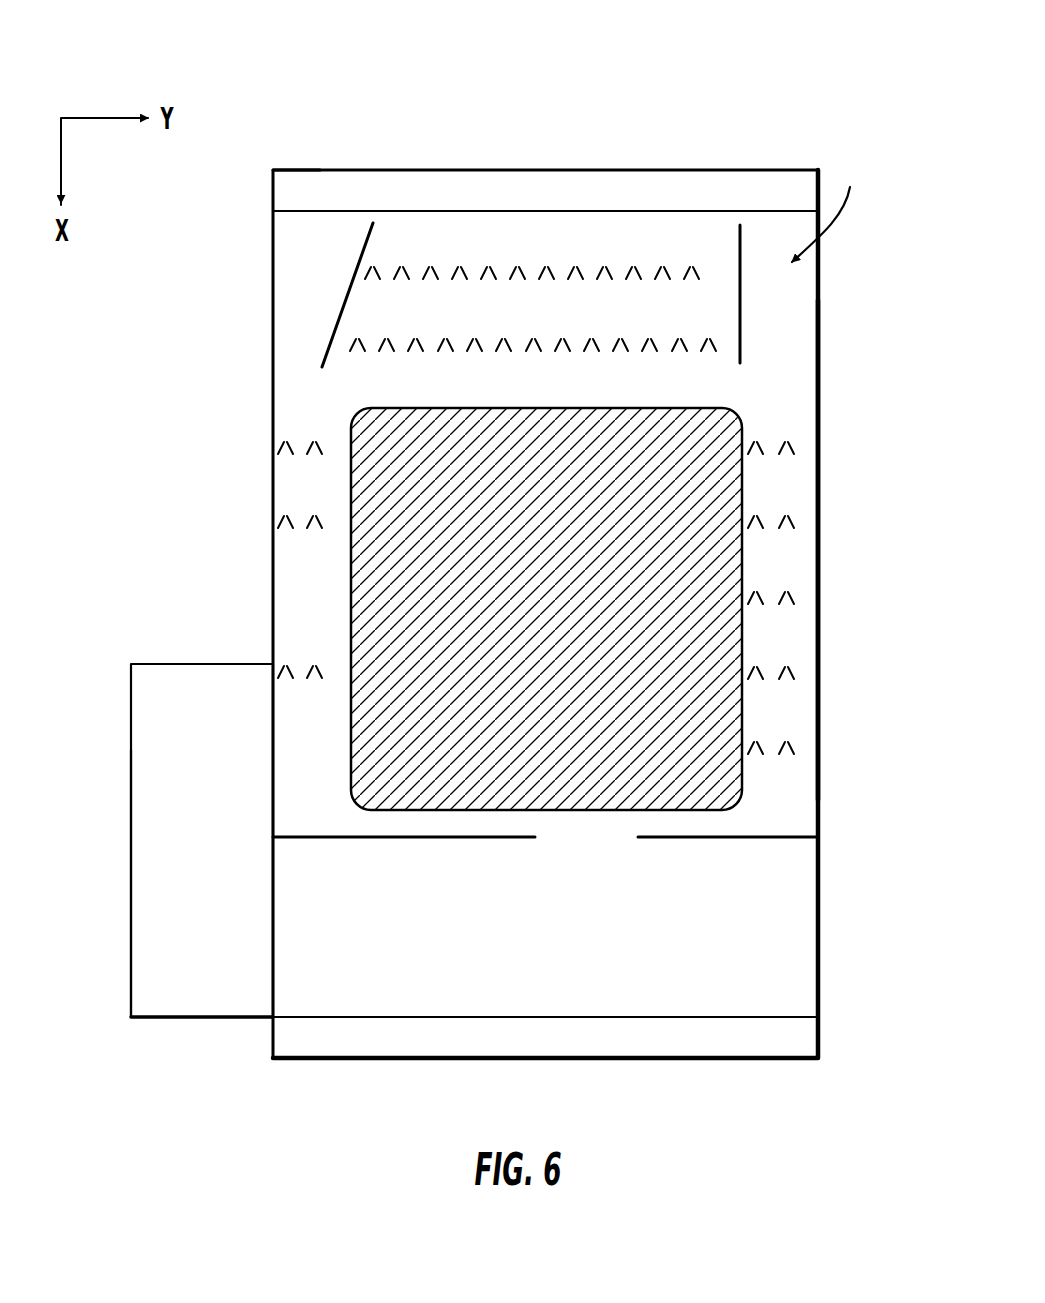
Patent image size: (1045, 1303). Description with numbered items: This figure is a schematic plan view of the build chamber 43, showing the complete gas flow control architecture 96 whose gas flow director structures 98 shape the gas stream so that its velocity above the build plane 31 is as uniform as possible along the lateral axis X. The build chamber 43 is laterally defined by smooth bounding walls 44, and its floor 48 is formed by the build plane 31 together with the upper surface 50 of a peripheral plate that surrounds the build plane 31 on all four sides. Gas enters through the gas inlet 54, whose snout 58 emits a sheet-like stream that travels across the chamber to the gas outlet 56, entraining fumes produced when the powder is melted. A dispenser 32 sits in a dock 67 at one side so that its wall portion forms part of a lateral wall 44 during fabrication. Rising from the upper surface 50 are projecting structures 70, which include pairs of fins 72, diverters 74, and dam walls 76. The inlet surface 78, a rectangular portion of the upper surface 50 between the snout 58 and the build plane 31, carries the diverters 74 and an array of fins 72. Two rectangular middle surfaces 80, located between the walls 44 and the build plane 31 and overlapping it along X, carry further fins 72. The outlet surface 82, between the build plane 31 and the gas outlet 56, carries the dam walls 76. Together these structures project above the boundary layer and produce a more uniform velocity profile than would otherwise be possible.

The build plane 31 is at (710, 663).
The dispenser 32 is at (158, 866).
The build chamber 43 is at (550, 529).
The bounding walls 44 is at (818, 568).
The floor 48 is at (778, 108).
The upper surface 50 is at (787, 373).
The gas inlet 54 is at (617, 190).
The gas outlet 56 is at (409, 1043).
The snout 58 is at (452, 210).
The dock 67 is at (157, 767).
The projecting structures 70 is at (829, 206).
The fins 72 is at (788, 447).
The diverters 74 is at (343, 302).
The dam walls 76 is at (403, 839).
The inlet surface 78 is at (521, 240).
The middle surfaces 80 is at (288, 603).
The outlet surface 82 is at (546, 867).
The gas flow control architecture 96 is at (286, 95).
The gas flow director structures 98 is at (316, 130).